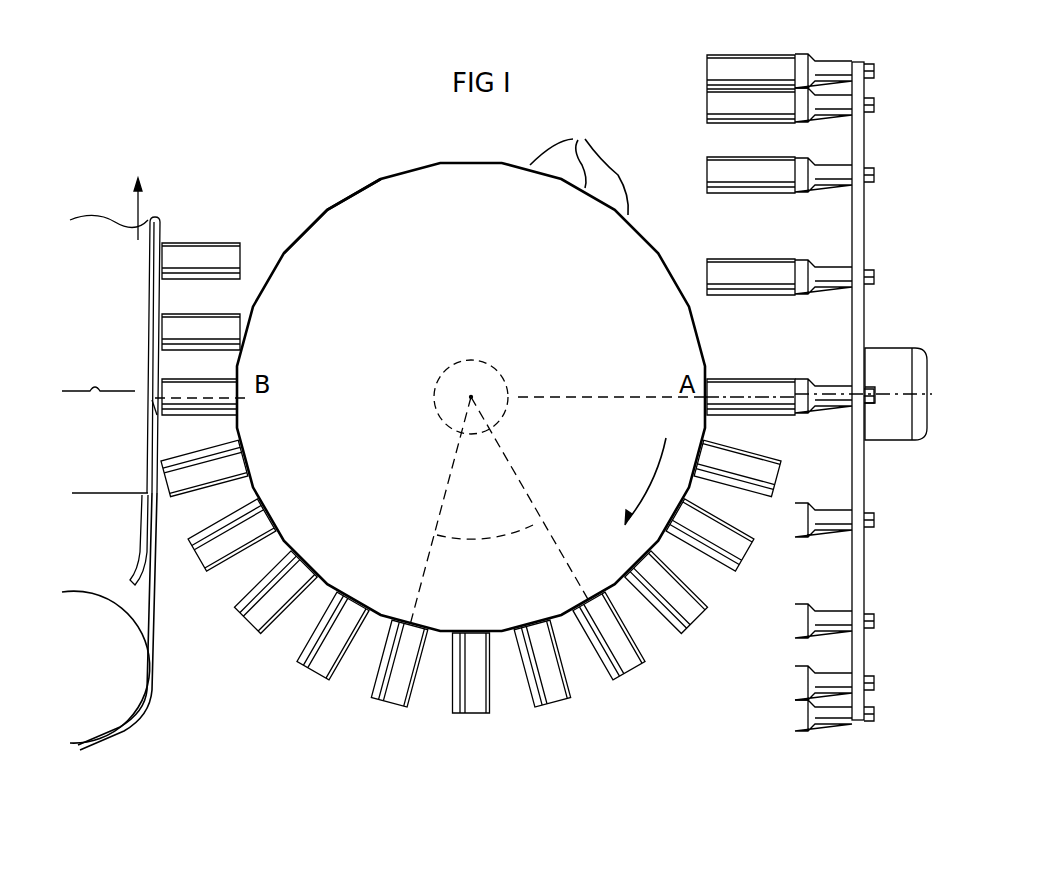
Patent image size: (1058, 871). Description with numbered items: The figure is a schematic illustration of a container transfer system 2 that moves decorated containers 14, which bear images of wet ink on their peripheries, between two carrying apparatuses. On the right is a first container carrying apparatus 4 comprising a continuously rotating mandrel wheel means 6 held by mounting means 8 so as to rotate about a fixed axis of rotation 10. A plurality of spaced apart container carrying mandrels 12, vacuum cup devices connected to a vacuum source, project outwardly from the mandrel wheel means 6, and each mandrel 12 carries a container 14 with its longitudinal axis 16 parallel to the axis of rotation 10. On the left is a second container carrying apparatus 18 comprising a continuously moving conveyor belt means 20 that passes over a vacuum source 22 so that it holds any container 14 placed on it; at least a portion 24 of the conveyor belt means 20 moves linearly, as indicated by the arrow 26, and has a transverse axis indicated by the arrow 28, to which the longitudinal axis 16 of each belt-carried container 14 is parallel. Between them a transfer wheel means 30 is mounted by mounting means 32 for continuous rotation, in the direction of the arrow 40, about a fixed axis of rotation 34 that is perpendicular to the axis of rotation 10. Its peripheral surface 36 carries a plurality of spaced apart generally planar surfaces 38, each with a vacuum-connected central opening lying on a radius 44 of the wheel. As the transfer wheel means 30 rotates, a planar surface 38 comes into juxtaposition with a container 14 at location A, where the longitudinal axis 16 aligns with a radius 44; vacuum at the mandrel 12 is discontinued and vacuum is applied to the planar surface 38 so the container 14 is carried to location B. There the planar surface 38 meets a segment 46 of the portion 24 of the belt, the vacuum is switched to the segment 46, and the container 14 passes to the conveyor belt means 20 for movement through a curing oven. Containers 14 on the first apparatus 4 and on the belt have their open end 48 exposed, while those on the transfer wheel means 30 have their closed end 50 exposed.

The container transfer system 2 is at (393, 735).
The first container carrying apparatus 4 is at (783, 712).
The mandrel wheel means 6 is at (866, 568).
The mounting means 8 is at (882, 435).
The fixed axis of rotation 10 is at (892, 398).
The container carrying mandrel 12 is at (835, 102).
The decorated container 14 is at (205, 412).
The longitudinal axis 16 is at (248, 408).
The second container carrying apparatus 18 is at (158, 710).
The conveyor belt means 20 is at (154, 630).
The vacuum source 22 is at (112, 493).
The portion of the conveyor belt means 24 is at (152, 368).
The arrow 26 is at (135, 228).
The transverse axis 28 is at (76, 373).
The transfer wheel means 30 is at (385, 146).
The mounting means 32 is at (492, 368).
The fixed axis of rotation 34 is at (473, 396).
The peripheral surface 36 is at (338, 208).
The planar surface 38 is at (579, 162).
The arrow 40 is at (652, 470).
The radius 44 is at (585, 398).
The segment 46 is at (155, 412).
The open end 48 is at (249, 268).
The closed end 50 is at (550, 700).